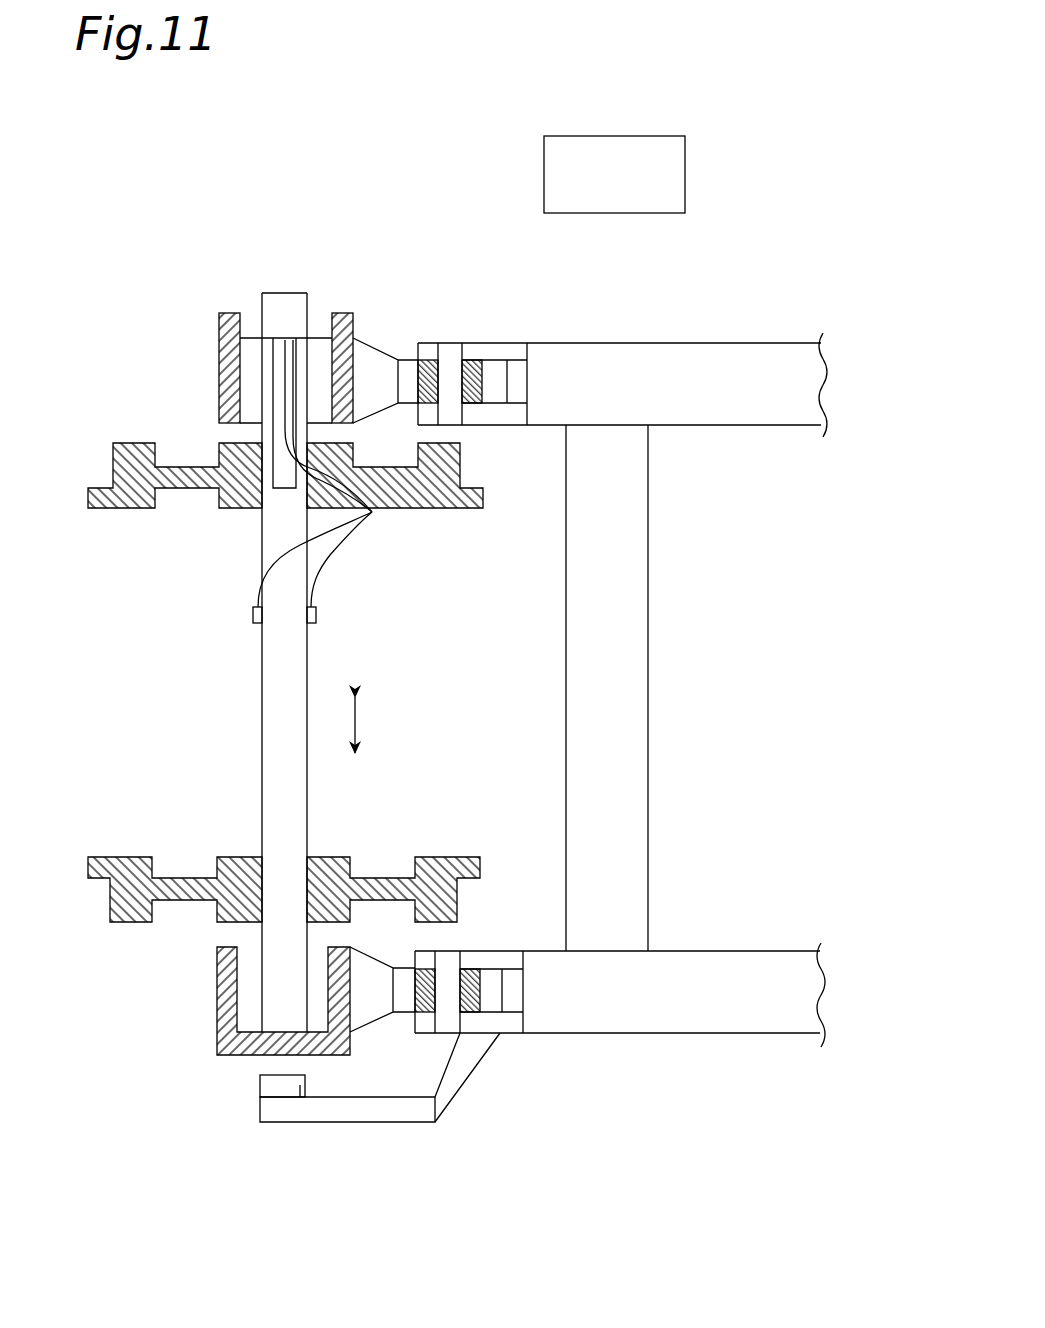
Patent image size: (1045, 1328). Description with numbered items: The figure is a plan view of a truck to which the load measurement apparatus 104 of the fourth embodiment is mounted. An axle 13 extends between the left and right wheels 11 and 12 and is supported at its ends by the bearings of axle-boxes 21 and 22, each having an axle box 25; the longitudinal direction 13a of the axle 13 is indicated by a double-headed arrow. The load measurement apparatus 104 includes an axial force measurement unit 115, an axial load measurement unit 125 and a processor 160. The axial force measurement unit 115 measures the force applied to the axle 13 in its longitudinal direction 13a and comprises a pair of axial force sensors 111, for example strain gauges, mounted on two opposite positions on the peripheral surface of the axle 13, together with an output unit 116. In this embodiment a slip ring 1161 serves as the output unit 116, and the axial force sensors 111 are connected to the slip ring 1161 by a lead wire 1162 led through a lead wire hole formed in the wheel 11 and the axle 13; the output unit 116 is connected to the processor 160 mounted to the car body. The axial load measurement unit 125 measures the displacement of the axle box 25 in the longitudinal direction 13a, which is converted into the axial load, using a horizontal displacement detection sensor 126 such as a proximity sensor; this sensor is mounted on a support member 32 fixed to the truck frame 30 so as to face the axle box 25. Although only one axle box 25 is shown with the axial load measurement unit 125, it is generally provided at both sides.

The wheel 11 is at (112, 457).
The wheel 12 is at (110, 893).
The axle 13 is at (268, 742).
The longitudinal direction 13a is at (357, 725).
The bearing of axle-box 21 is at (317, 336).
The bearing of axle-box 22 is at (245, 1022).
The axle box 25 is at (355, 308).
The truck frame 30 is at (653, 518).
The support member 32 is at (456, 1093).
The load measurement apparatus 104 is at (260, 657).
The axial force sensor 111 is at (252, 615).
The axial force measurement unit 115 is at (290, 657).
The output unit 116 is at (291, 297).
The slip ring 1161 is at (253, 299).
The lead wire 1162 is at (320, 536).
The axial load measurement unit 125 is at (393, 1138).
The horizontal displacement detection sensor 126 is at (305, 1082).
The processor 160 is at (662, 134).